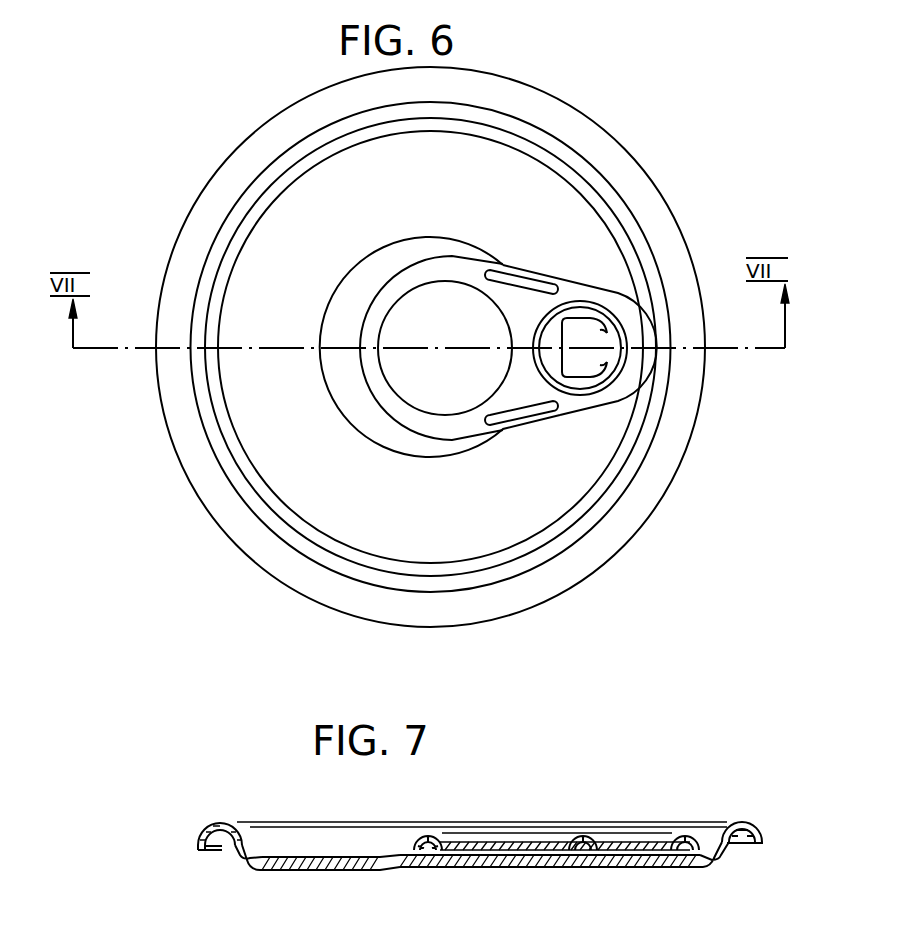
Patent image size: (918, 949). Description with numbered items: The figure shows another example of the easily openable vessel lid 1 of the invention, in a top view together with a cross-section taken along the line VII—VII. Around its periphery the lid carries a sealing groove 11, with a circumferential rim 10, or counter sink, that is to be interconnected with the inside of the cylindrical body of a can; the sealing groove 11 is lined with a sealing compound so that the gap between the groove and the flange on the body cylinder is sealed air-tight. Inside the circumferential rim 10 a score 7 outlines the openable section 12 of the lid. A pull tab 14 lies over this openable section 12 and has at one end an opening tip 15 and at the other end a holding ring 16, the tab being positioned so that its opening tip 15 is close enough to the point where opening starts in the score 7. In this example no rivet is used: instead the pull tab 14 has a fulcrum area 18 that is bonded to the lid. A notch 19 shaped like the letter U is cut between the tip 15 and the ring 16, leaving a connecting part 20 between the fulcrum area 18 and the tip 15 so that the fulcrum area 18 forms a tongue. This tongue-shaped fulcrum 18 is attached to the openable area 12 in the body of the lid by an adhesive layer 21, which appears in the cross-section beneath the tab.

In FIG. 6, the can end 1 is at (599, 126).
In FIG. 7, the can end 1 is at (745, 798).
In FIG. 6, the score 7 is at (298, 533).
In FIG. 7, the score 7 is at (280, 858).
In FIG. 7, the circumferential rim 10 is at (250, 866).
In FIG. 7, the sealing groove 11 is at (205, 832).
In FIG. 6, the openable section 12 is at (572, 203).
In FIG. 7, the openable section 12 is at (332, 870).
In FIG. 6, the pull tab 14 is at (508, 295).
In FIG. 7, the pull tab 14 is at (583, 832).
In FIG. 6, the opening tip 15 is at (650, 350).
In FIG. 7, the opening tip 15 is at (685, 832).
In FIG. 6, the holding ring 16 is at (418, 430).
In FIG. 7, the holding ring 16 is at (428, 835).
In FIG. 6, the fulcrum area 18 is at (587, 348).
In FIG. 7, the fulcrum area 18 is at (222, 851).
In FIG. 6, the notch 19 is at (591, 320).
In FIG. 6, the connecting part 20 is at (607, 343).
In FIG. 7, the adhesive layer 21 is at (627, 855).